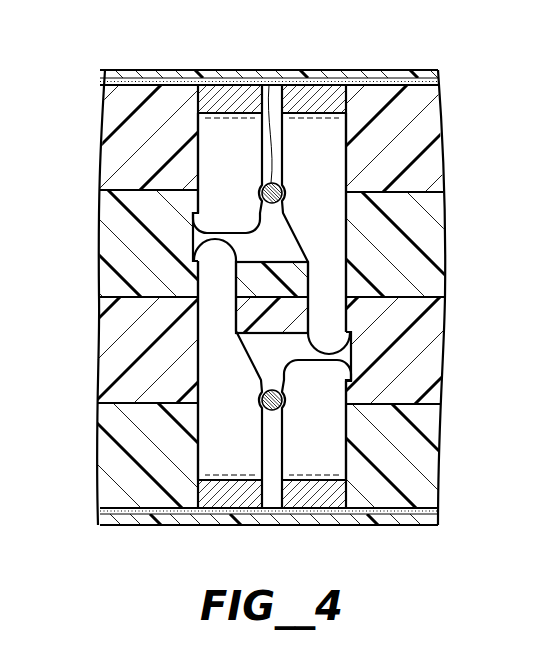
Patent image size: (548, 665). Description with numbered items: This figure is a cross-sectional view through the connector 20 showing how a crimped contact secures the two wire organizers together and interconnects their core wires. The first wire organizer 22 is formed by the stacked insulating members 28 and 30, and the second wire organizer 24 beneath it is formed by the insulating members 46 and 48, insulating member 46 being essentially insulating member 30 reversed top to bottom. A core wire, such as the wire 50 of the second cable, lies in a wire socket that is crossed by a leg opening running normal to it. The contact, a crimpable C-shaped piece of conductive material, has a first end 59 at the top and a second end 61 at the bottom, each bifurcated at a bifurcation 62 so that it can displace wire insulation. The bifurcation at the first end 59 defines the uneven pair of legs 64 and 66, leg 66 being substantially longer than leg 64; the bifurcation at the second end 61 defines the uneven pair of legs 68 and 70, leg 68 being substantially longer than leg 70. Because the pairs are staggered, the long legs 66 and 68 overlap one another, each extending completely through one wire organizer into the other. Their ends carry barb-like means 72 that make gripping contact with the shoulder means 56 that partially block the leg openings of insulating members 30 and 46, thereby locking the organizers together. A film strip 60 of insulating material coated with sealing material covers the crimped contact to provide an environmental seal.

The connector 20 is at (136, 531).
The first wire organizer 22 is at (100, 151).
The second wire organizer 24 is at (92, 448).
The insulating member 28 is at (407, 145).
The insulating member 30 is at (269, 85).
The insulating member 46 is at (400, 362).
The insulating member 48 is at (405, 472).
The wire 50 is at (271, 414).
The shoulder means 56 is at (243, 316).
The first end 59 is at (226, 84).
The film strip 60 is at (418, 520).
The second end 61 is at (226, 523).
The bifurcation 62 is at (279, 108).
The leg 64 is at (241, 211).
The leg 66 is at (329, 211).
The leg 68 is at (241, 403).
The leg 70 is at (331, 403).
The barb-like means 72 is at (232, 256).